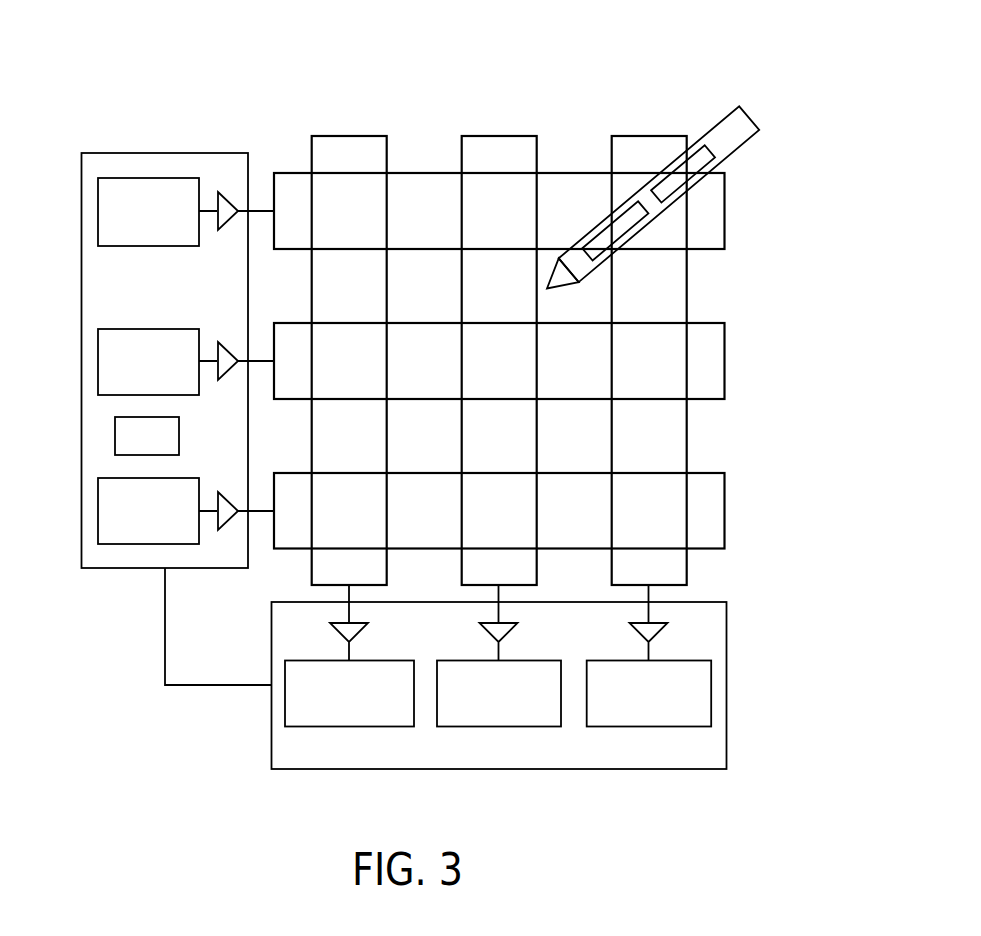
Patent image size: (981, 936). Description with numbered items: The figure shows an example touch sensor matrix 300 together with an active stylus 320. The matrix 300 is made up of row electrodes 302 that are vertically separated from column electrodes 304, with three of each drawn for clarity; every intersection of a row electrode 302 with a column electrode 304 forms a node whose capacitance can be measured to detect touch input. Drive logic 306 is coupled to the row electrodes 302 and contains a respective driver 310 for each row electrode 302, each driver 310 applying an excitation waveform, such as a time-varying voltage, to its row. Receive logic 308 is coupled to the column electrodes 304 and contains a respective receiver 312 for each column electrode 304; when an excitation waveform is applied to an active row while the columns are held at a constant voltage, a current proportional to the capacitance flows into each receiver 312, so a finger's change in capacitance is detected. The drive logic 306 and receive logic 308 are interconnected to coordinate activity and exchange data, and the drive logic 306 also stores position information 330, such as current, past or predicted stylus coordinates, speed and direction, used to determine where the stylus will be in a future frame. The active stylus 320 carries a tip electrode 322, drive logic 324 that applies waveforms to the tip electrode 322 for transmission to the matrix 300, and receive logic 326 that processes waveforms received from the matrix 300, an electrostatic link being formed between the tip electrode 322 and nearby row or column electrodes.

The touch sensor matrix 300 is at (68, 95).
The row electrodes 302 is at (740, 210).
The column electrodes 304 is at (352, 120).
The drive logic 306 is at (152, 150).
The receive logic 308 is at (727, 688).
The driver 310 is at (132, 237).
The receiver 312 is at (333, 719).
The active stylus 320 is at (752, 114).
The tip electrode 322 is at (553, 275).
The drive logic 324 is at (609, 226).
The receive logic 326 is at (716, 152).
The position information 330 is at (164, 447).